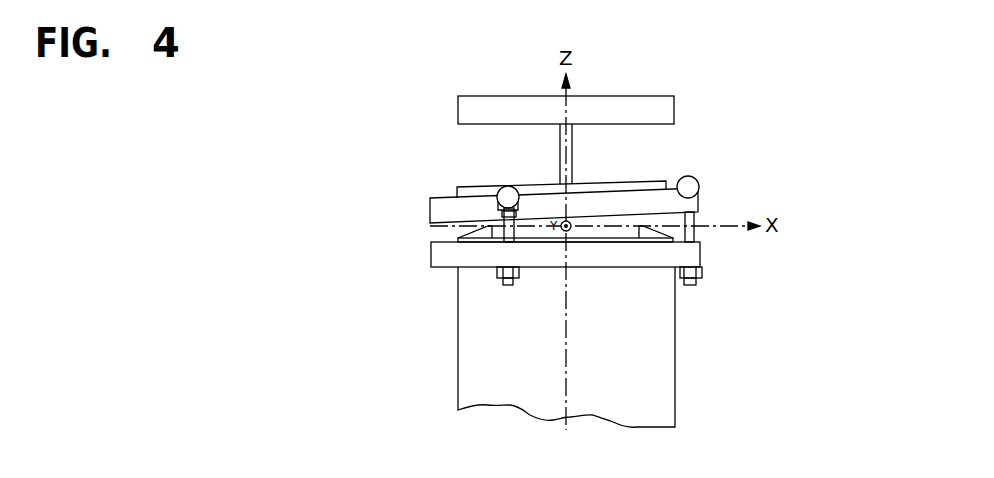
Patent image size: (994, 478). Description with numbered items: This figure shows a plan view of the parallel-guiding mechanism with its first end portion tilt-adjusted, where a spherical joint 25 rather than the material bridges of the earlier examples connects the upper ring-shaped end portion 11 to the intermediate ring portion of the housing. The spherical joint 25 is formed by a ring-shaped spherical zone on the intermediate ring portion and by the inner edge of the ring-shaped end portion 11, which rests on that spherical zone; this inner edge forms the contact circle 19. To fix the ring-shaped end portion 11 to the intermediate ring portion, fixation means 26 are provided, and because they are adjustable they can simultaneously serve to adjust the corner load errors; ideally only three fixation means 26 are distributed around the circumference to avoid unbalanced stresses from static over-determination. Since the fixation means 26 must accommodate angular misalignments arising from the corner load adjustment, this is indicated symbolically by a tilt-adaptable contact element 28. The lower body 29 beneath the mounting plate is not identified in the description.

The ring-shaped end portion 11 is at (452, 214).
The contact circle 19 is at (490, 226).
The spherical joint 25 is at (596, 233).
The fixation means 26 is at (694, 228).
The tilt-adaptable contact element 28 is at (698, 186).
The base body 29 is at (622, 315).